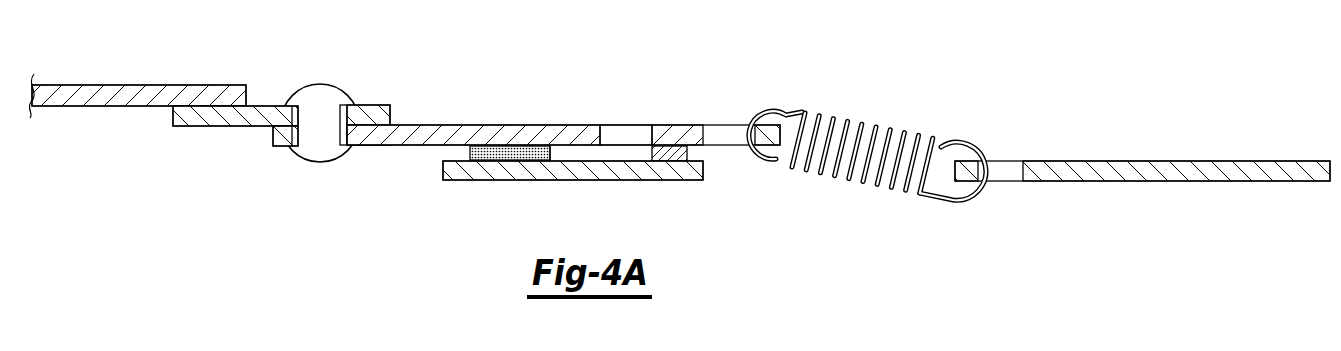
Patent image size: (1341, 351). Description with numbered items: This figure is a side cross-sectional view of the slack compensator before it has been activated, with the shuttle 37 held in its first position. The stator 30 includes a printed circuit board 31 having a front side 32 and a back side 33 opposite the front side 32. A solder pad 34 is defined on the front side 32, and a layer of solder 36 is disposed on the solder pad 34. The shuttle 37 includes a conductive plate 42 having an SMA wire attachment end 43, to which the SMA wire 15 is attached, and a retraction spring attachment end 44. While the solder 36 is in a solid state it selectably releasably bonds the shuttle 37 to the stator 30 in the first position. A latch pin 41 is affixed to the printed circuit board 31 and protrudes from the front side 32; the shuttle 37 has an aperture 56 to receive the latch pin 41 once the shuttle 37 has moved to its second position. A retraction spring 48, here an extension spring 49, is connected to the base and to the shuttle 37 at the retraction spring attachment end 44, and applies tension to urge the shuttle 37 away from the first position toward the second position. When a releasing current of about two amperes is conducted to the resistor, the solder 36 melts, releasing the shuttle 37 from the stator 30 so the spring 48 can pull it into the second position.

The SMA wire 15 is at (121, 85).
The SMA wire attachment end 43 is at (273, 136).
The shuttle 37 is at (424, 128).
The conductive plate 42 is at (560, 102).
The aperture 56 is at (627, 135).
The front side 32 is at (560, 123).
The solder pad 34 is at (505, 166).
The layer of solder 36 is at (550, 146).
The latch pin 41 is at (652, 152).
The back side 33 is at (452, 181).
The stator 30 is at (883, 204).
The printed circuit board 31 is at (883, 204).
The retraction spring attachment end 44 is at (790, 133).
The retraction spring 48 is at (889, 145).
The extension spring 49 is at (863, 127).